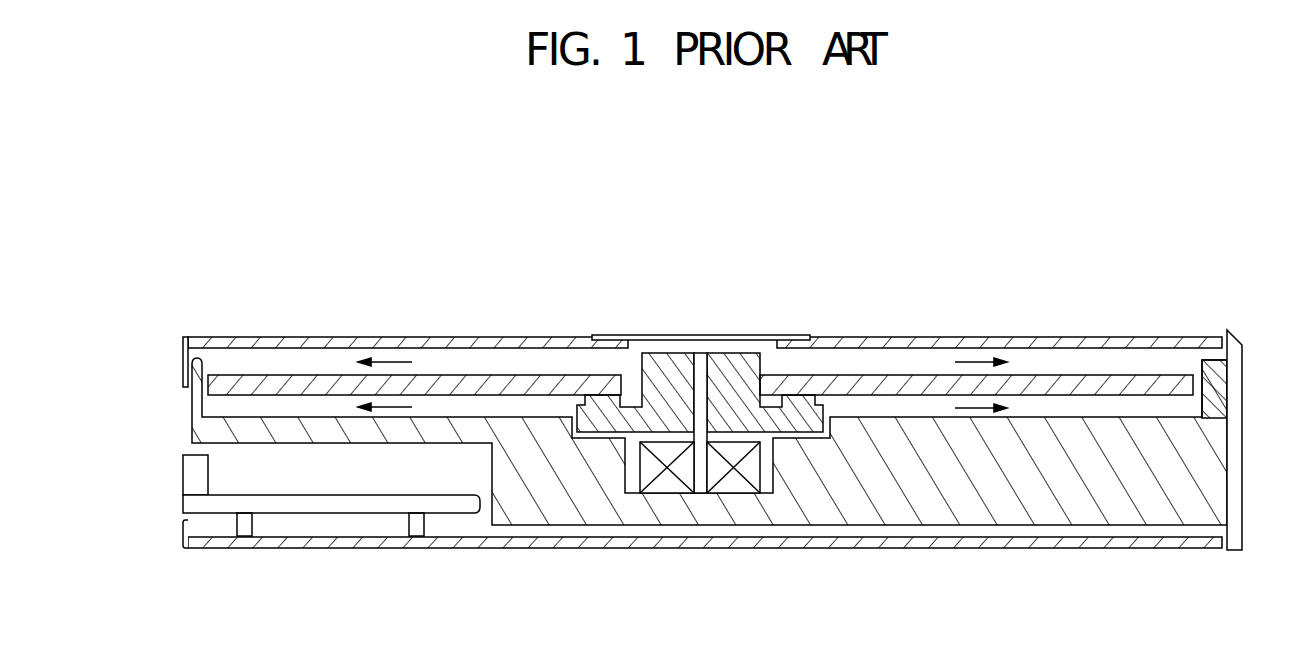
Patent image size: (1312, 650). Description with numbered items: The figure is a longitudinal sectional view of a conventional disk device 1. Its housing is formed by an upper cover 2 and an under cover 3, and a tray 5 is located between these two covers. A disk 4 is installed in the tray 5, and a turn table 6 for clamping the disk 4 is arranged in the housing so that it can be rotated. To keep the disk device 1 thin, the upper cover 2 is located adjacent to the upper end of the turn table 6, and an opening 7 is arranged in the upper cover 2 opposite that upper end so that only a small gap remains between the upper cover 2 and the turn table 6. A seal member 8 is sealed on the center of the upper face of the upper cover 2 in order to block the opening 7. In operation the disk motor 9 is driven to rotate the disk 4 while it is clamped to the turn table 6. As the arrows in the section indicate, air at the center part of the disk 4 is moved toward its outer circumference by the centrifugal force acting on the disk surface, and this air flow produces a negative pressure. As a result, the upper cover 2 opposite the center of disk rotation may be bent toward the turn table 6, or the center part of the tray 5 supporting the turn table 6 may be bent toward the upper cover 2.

The disk device 1 is at (607, 243).
The upper cover 2 is at (1003, 338).
The under cover 3 is at (935, 550).
The disk 4 is at (462, 373).
The tray 5 is at (1243, 478).
The turn table 6 is at (745, 362).
The opening 7 is at (672, 353).
The seal member 8 is at (777, 337).
The disk motor 9 is at (648, 470).